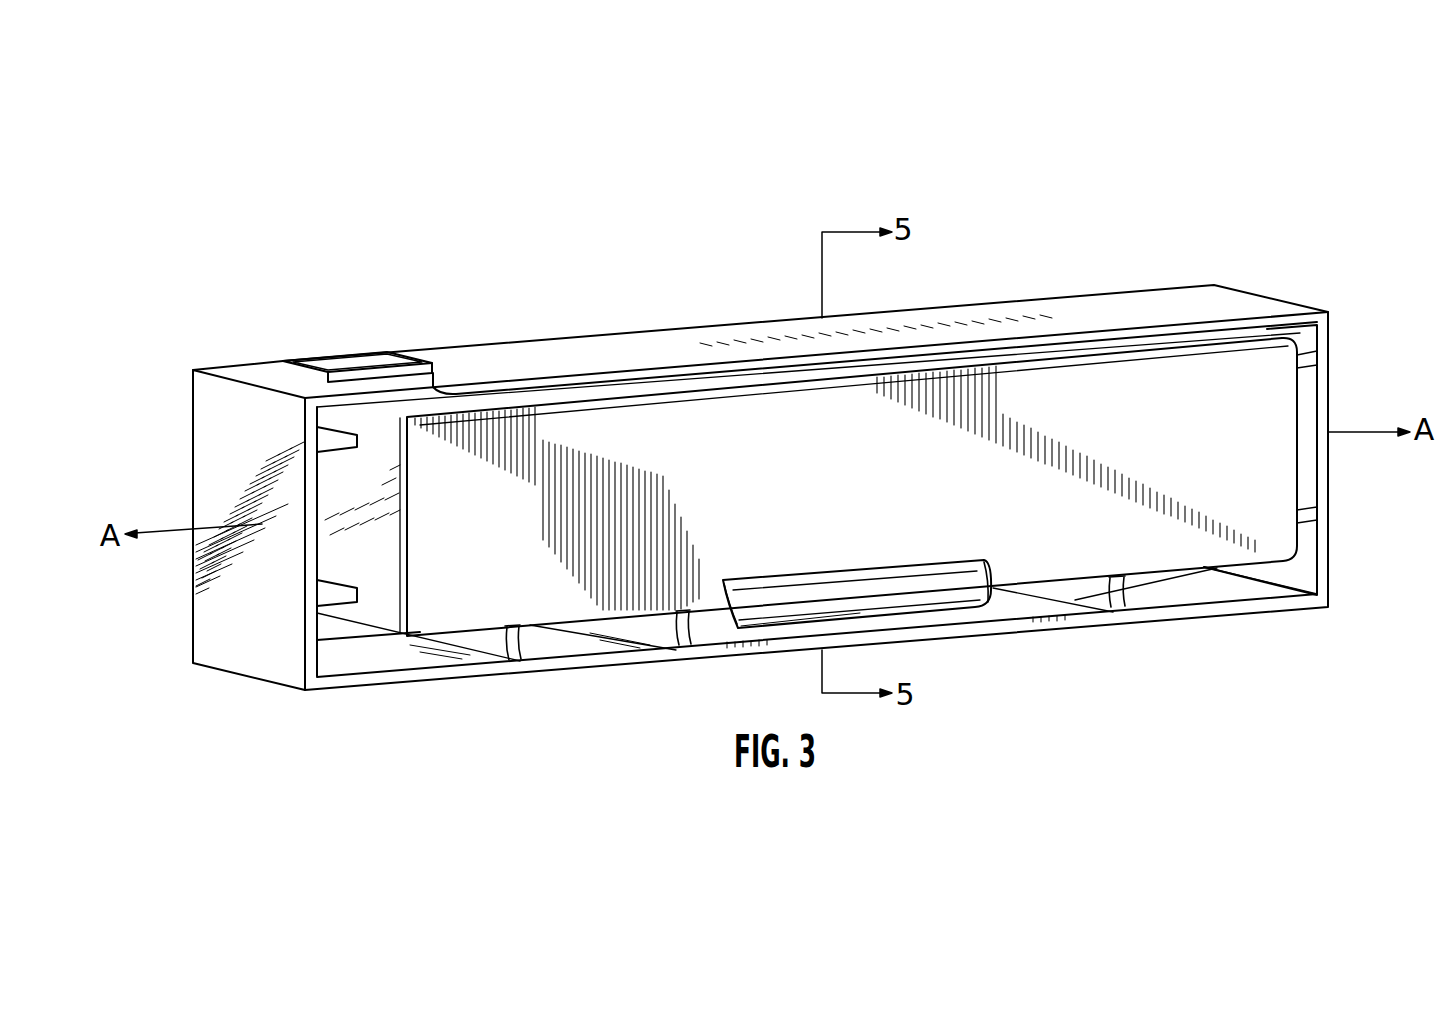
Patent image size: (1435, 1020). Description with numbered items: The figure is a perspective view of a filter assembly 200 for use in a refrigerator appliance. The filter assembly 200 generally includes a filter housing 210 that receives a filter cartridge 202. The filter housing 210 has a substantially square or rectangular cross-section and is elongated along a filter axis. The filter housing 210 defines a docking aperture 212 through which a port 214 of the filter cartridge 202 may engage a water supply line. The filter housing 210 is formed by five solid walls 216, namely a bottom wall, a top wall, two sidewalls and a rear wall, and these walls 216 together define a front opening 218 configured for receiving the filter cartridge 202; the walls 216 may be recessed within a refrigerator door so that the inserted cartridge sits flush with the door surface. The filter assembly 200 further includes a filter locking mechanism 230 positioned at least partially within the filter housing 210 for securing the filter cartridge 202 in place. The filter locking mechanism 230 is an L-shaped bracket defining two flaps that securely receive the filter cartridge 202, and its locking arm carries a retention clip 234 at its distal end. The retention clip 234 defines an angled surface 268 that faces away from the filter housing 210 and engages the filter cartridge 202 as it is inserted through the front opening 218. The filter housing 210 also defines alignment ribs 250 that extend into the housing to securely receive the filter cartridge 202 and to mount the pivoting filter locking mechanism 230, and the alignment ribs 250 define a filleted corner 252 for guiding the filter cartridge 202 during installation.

The filter assembly 200 is at (1212, 131).
The filter cartridge 202 is at (827, 503).
The filter housing 210 is at (1265, 282).
The docking aperture 212 is at (286, 377).
The port 214 is at (357, 360).
The solid walls 216 is at (1170, 613).
The front opening 218 is at (1240, 591).
The filter locking mechanism 230 is at (720, 629).
The retention clip 234 is at (977, 589).
The alignment ribs 250 is at (500, 643).
The filleted corner 252 is at (346, 613).
The angled surface 268 is at (943, 597).